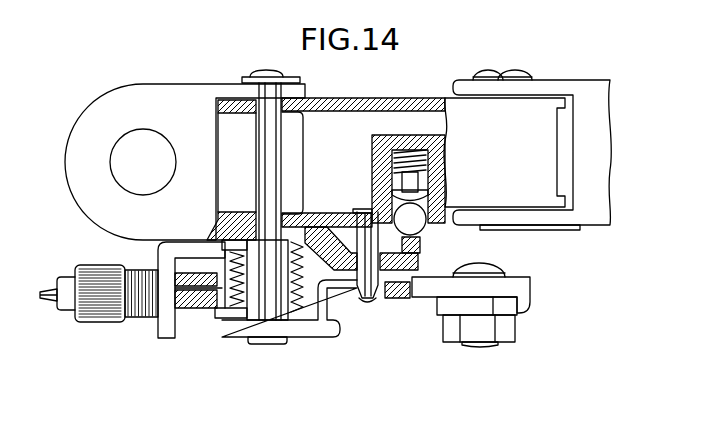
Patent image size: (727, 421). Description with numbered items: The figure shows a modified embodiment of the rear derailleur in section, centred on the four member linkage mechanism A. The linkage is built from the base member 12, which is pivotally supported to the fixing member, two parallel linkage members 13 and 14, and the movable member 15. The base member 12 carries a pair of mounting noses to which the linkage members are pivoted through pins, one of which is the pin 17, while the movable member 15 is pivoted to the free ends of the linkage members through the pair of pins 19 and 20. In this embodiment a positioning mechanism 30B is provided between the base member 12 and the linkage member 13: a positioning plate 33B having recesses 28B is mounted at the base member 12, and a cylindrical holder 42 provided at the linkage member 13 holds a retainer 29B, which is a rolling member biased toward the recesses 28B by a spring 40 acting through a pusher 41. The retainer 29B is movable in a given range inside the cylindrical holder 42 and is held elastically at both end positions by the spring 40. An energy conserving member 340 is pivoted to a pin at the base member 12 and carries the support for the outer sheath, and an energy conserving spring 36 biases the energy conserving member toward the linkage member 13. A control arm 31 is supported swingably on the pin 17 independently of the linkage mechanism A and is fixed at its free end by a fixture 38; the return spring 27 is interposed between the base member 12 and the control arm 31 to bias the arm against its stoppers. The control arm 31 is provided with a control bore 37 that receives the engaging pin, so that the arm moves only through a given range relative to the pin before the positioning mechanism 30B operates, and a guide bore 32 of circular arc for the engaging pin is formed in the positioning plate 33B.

The base member 12 is at (103, 215).
The linkage member 13 is at (325, 214).
The linkage member 14 is at (353, 117).
The linkage mechanism A is at (420, 94).
The movable member 15 is at (583, 224).
The pin 17 is at (264, 316).
The pin 19 is at (519, 70).
The pin 20 is at (488, 70).
The return spring 27 is at (238, 298).
The recesses 28B is at (421, 240).
The retainer 29B is at (424, 230).
The positioning mechanism 30B is at (454, 236).
The control arm 31 is at (325, 331).
The guide bore 32 is at (346, 272).
The positioning plate 33B is at (397, 298).
The energy conserving spring 36 is at (193, 302).
The control bore 37 is at (371, 306).
The fixture 38 is at (484, 335).
The spring 40 is at (393, 156).
The pusher 41 is at (392, 179).
The cylindrical holder 42 is at (374, 147).
The energy conserving member 340 is at (185, 250).